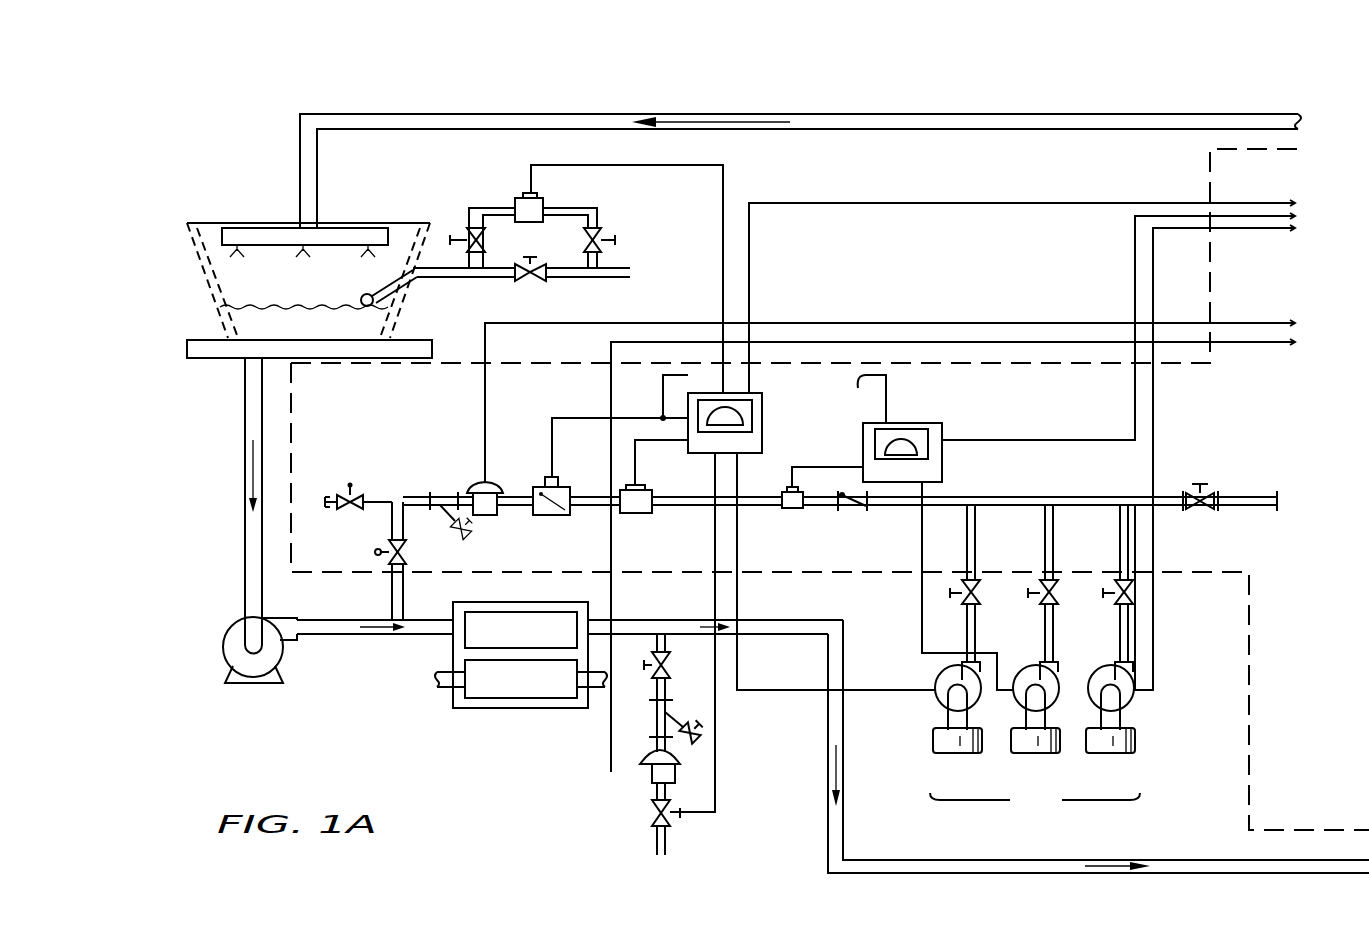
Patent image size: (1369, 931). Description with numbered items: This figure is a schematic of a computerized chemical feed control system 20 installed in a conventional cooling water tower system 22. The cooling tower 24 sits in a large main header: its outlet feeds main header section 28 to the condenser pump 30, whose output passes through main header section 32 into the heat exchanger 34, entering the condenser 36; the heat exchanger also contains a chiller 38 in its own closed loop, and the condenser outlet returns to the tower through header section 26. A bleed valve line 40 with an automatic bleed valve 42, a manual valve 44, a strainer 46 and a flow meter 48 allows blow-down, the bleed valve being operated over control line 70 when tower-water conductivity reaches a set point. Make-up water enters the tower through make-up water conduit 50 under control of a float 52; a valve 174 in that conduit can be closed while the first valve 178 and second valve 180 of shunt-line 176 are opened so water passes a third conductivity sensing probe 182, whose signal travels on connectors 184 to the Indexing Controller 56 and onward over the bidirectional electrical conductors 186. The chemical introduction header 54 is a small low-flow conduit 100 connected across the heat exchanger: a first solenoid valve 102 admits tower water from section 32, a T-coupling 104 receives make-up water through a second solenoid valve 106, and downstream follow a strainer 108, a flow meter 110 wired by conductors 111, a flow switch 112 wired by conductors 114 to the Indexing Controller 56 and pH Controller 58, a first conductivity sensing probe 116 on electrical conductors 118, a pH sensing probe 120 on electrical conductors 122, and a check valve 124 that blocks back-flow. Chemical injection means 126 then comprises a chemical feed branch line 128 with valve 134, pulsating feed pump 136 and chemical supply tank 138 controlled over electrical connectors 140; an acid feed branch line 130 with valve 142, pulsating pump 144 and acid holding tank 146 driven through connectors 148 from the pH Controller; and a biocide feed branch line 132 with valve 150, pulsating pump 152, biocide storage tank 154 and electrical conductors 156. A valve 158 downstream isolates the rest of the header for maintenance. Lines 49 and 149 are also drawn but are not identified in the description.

The computerized chemical feed control system 20 is at (1100, 393).
The cooling water tower system 22 is at (1052, 173).
The cooling tower 24 is at (200, 298).
The header section 26 is at (302, 172).
The main header section 28 is at (245, 538).
The condenser pump 30 is at (232, 656).
The main header section 32 is at (363, 638).
The heat exchanger 34 is at (521, 716).
The condenser 36 is at (576, 612).
The chiller 38 is at (480, 693).
The bleed valve line 40 is at (668, 644).
The automatic bleed valve 42 is at (668, 822).
The manual valve 44 is at (645, 662).
The strainer 46 is at (702, 727).
The flow meter 48 is at (652, 777).
The control line 49 is at (609, 384).
The make-up water conduit 50 is at (437, 279).
The float 52 is at (363, 294).
The chemical introduction header 54 is at (409, 496).
The Indexing Controller 56 is at (790, 385).
The pH Controller 58 is at (947, 436).
The control line 70 is at (717, 788).
The conduit 100 is at (395, 595).
The first solenoid valve 102 is at (404, 568).
The T-coupling 104 is at (385, 506).
The second solenoid valve 106 is at (360, 506).
The strainer 108 is at (447, 501).
The flow meter 110 is at (489, 481).
The conductors 111 is at (693, 323).
The flow switch 112 is at (556, 478).
The conductors 114 is at (653, 393).
The first conductivity sensing probe 116 is at (636, 514).
The electrical conductors 118 is at (652, 443).
The pH sensing probe 120 is at (792, 509).
The electrical conductors 122 is at (840, 465).
The check valve 124 is at (847, 503).
The chemical injection means 126 is at (1033, 662).
The chemical feed branch line 128 is at (975, 540).
The acid feed branch line 130 is at (1046, 553).
The biocide feed branch line 132 is at (1121, 548).
The valve 134 is at (961, 582).
The pulsating feed pump 136 is at (937, 705).
The chemical supply tank 138 is at (933, 743).
The electrical connectors 140 is at (872, 690).
The valve 142 is at (1043, 604).
The pulsating pump 144 is at (1052, 680).
The acid holding tank 146 is at (1035, 750).
The connectors 148 is at (923, 620).
The control line 149 is at (1065, 442).
The valve 150 is at (1133, 605).
The pulsating pump 152 is at (1134, 700).
The biocide storage tank 154 is at (1135, 750).
The electrical conductors 156 is at (1155, 648).
The valve 158 is at (1214, 493).
The valve 174 is at (531, 283).
The shunt-line 176 is at (598, 210).
The first valve 178 is at (603, 239).
The second valve 180 is at (468, 229).
The third conductivity sensing probe 182 is at (520, 197).
The connectors 184 is at (723, 167).
The electrical conductors 186 is at (950, 167).